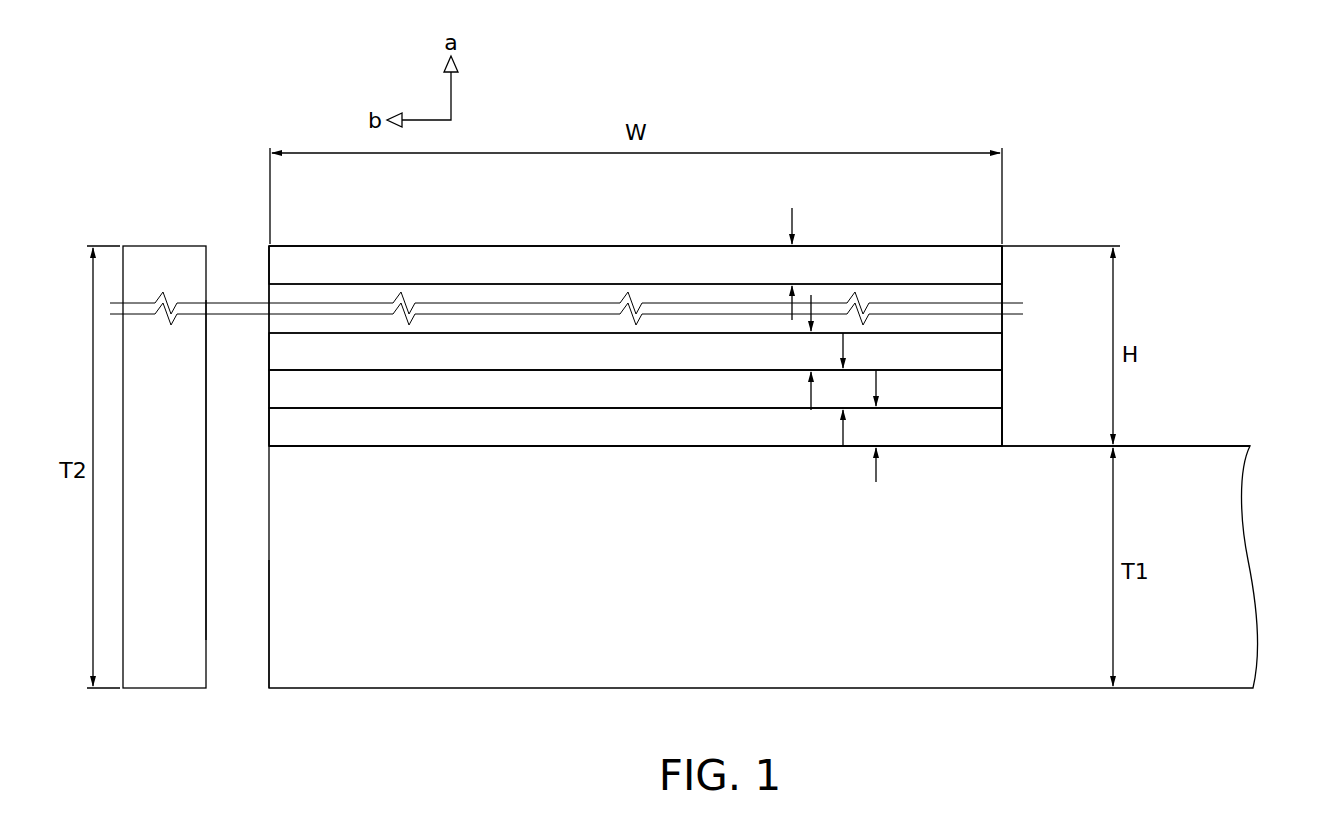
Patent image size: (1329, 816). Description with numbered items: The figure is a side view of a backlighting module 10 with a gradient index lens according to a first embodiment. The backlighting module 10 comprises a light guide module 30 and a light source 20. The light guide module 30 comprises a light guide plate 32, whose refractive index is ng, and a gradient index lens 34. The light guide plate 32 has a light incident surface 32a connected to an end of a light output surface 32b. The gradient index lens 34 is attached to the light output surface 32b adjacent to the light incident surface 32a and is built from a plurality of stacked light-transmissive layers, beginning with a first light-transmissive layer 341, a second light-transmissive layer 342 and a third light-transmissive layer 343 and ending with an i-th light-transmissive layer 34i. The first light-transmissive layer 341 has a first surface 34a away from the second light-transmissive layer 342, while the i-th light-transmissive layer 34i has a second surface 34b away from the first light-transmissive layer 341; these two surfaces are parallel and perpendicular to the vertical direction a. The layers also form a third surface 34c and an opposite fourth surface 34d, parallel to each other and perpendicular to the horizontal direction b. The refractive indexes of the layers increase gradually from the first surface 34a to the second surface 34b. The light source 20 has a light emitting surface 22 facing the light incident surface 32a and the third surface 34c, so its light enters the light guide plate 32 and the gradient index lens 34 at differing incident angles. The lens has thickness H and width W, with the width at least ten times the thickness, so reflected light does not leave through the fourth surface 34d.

The backlighting module 10 is at (138, 140).
The light source 20 is at (167, 265).
The light emitting surface 22 is at (210, 421).
The light guide module 30 is at (1154, 288).
The light guide plate 32 is at (965, 657).
The light incident surface 32a is at (266, 629).
The light output surface 32b is at (1166, 443).
The gradient index lens 34 is at (877, 226).
The first surface 34a is at (556, 450).
The second surface 34b is at (583, 244).
The third surface 34c is at (267, 291).
The fourth surface 34d is at (1006, 292).
The i-th light-transmissive layer 34i is at (996, 262).
The first light-transmissive layer 341 is at (996, 427).
The second light-transmissive layer 342 is at (996, 389).
The third light-transmissive layer 343 is at (996, 351).